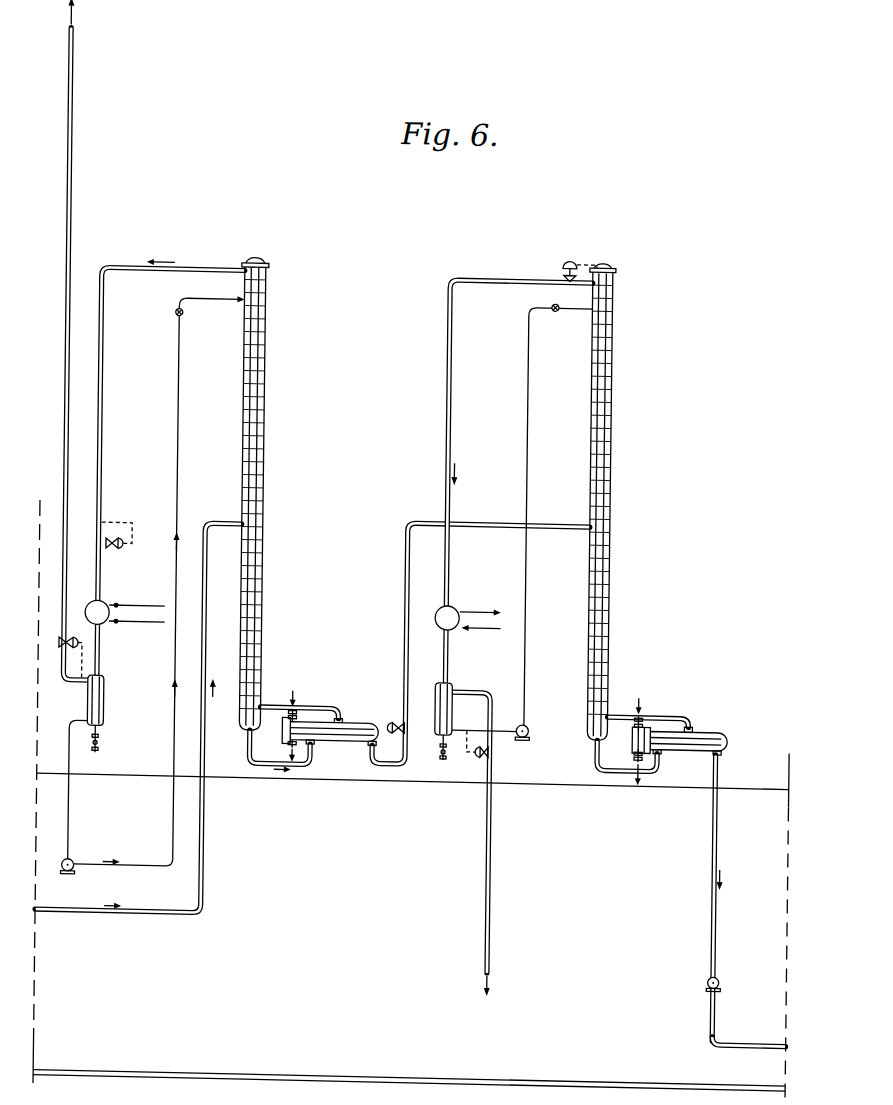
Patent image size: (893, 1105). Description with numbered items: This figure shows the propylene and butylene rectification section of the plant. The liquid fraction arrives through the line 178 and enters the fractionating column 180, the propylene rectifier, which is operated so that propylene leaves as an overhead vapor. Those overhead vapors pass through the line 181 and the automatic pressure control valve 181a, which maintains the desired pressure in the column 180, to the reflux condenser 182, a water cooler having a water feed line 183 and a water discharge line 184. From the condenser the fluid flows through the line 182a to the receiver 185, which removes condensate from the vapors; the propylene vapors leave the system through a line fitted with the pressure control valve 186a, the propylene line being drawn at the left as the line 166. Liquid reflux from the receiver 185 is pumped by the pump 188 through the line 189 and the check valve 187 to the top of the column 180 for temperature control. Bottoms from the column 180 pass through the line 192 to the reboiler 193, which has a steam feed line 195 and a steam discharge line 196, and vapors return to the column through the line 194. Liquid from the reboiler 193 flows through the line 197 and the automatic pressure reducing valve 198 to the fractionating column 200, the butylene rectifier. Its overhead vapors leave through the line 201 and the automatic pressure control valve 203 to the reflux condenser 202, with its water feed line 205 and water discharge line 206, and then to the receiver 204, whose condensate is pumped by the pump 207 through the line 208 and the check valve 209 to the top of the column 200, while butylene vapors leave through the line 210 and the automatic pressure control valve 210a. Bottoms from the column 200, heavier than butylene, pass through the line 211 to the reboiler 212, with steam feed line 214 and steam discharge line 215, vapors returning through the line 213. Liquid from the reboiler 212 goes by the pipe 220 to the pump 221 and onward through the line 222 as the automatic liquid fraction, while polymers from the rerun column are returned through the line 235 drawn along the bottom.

The propylene line 166 is at (66, 416).
The line 178 is at (163, 920).
The fractionating column 180 is at (262, 504).
The line 181 is at (211, 272).
The automatic pressure control valve 181a is at (118, 546).
The reflux condenser 182 is at (100, 608).
The line 182a is at (100, 676).
The water feed line 183 is at (118, 610).
The water discharge line 184 is at (119, 630).
The receiver 185 is at (104, 730).
The pressure control valve 186a is at (72, 657).
The check valve 187 is at (171, 319).
The pump 188 is at (69, 880).
The line 189 is at (176, 406).
The line 192 is at (257, 776).
The reboiler 193 is at (357, 732).
The line 194 is at (341, 712).
The steam feed line 195 is at (295, 718).
The steam discharge line 196 is at (289, 752).
The line 197 is at (404, 611).
The automatic pressure reducing valve 198 is at (400, 736).
The fractionating column 200 is at (608, 508).
The line 201 is at (508, 282).
The reflux condenser 202 is at (451, 608).
The automatic pressure control valve 203 is at (564, 259).
The receiver 204 is at (454, 714).
The water feed line 205 is at (489, 631).
The water discharge line 206 is at (488, 610).
The pump 207 is at (530, 729).
The line 208 is at (526, 455).
The check valve 209 is at (551, 310).
The line 210 is at (494, 692).
The automatic pressure control valve 210a is at (475, 754).
The line 211 is at (597, 761).
The reboiler 212 is at (690, 746).
The line 213 is at (693, 711).
The steam feed line 214 is at (644, 720).
The steam discharge line 215 is at (636, 754).
The pipe 220 is at (720, 934).
The pump 221 is at (724, 977).
The line 222 is at (719, 1029).
The line 235 is at (452, 1078).